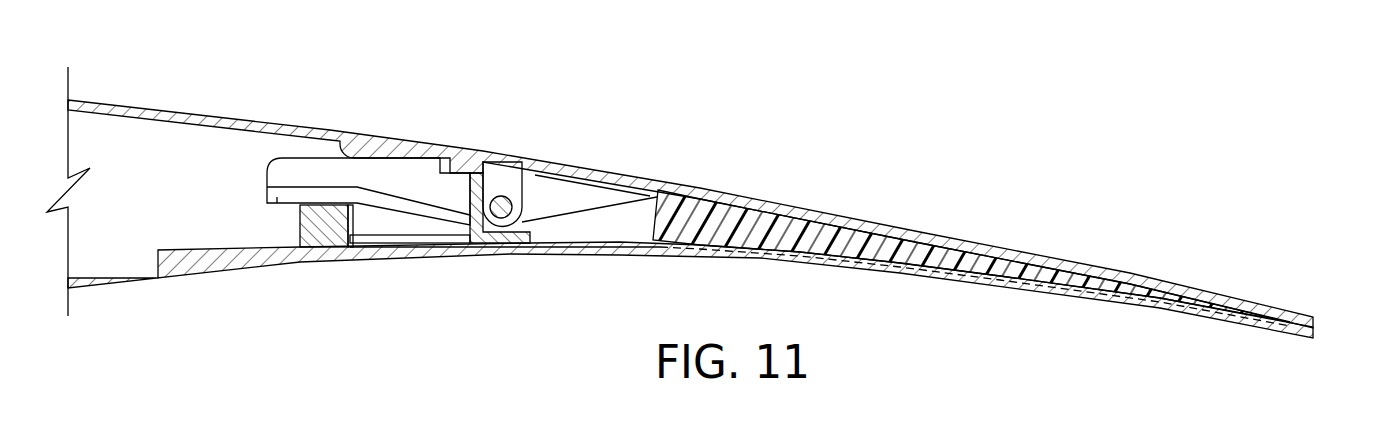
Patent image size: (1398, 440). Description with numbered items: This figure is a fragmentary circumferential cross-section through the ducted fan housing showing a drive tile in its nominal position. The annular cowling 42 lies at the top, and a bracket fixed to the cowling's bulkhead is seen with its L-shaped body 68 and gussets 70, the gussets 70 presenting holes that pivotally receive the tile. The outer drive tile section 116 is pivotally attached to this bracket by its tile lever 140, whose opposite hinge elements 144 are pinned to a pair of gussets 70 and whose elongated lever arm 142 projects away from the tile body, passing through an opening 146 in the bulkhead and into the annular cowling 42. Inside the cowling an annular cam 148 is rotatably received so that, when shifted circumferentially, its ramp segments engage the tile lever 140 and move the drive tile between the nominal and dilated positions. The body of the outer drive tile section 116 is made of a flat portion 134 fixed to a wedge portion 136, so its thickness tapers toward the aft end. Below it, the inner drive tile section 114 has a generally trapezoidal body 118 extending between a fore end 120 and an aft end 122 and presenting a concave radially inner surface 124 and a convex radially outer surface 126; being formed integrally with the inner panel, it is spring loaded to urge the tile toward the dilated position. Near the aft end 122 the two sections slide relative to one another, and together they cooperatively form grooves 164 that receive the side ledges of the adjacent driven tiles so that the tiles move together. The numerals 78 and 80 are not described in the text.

The annular cowling 42 is at (255, 120).
The lever arm 142 is at (367, 173).
The hinge elements 144 is at (500, 177).
The tile lever 140 is at (550, 190).
The seal 78 is at (600, 245).
The outer drive tile section 116 is at (863, 217).
The flat portion 134 is at (988, 242).
The wedge portion 136 is at (1107, 277).
The inner layer 80 is at (1228, 300).
The grooves 164 is at (1275, 318).
The aft end 122 is at (1330, 344).
The annular cam 148 is at (310, 240).
The opening 146 is at (397, 237).
The L-shaped body 68 is at (473, 240).
The gussets 70 is at (513, 228).
The radially inner surface 124 is at (573, 255).
The radially outer surface 126 is at (640, 245).
The inner drive tile section 114 is at (915, 274).
The body 118 is at (1043, 290).
The fore end 120 is at (397, 303).